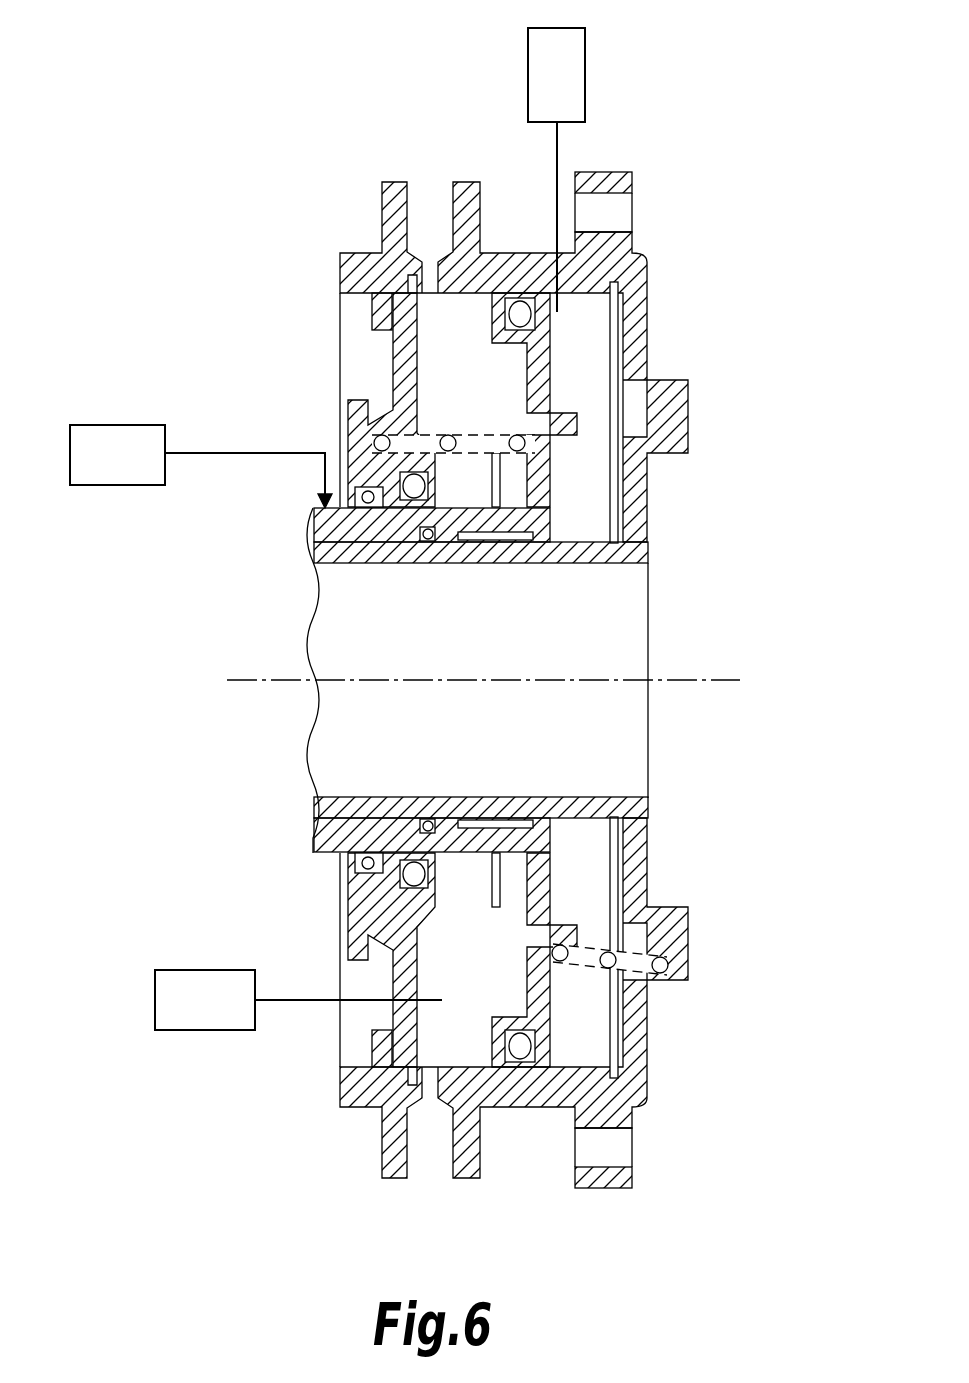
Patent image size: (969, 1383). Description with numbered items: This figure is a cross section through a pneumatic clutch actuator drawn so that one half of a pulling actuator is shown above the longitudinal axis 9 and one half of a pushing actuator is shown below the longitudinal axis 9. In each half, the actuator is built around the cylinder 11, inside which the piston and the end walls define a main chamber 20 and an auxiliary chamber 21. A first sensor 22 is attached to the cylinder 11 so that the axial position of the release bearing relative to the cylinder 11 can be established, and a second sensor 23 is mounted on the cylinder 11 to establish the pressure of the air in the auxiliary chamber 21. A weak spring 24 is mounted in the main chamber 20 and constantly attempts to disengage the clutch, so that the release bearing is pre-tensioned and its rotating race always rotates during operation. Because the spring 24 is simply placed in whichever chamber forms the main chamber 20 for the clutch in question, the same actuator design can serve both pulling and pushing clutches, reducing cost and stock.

The longitudinal axis 9 is at (713, 680).
The cylinder 11 is at (632, 847).
The main chamber 20 is at (450, 367).
The auxiliary chamber 21 is at (575, 337).
The first sensor 22 is at (110, 425).
The second sensor 23 is at (568, 68).
The weak spring 24 is at (452, 455).